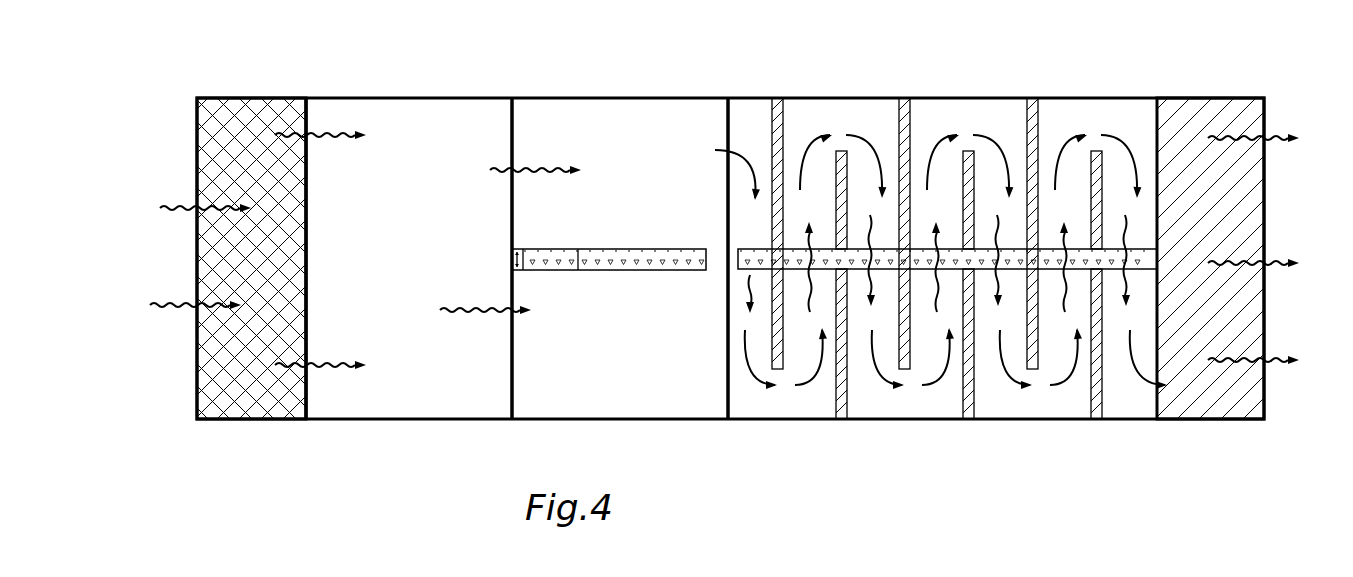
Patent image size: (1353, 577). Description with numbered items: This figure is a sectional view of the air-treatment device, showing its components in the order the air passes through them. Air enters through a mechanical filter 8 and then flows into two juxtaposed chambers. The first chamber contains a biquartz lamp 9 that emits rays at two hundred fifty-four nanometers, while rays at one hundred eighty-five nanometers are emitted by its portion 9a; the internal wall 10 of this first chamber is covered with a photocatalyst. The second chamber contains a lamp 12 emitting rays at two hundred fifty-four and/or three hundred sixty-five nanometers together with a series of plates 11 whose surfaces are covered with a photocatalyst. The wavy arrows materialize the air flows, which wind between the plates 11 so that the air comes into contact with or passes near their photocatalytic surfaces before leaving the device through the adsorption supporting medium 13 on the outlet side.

The mechanical filter 8 is at (232, 135).
The biquartz lamp 9 is at (652, 244).
The portion of the biquartz lamp 9a is at (547, 244).
The internal wall 10 is at (718, 129).
The plates 11 is at (903, 130).
The lamp emitting rays at 254 nm and/or 365 nm 12 is at (952, 272).
The adsorption supporting medium 13 is at (1203, 405).